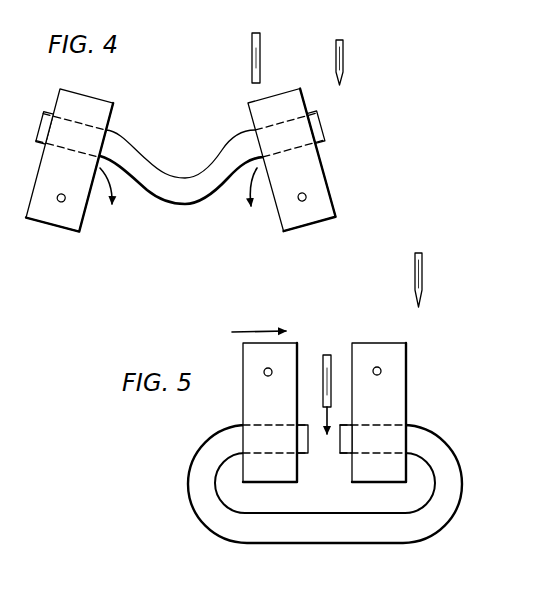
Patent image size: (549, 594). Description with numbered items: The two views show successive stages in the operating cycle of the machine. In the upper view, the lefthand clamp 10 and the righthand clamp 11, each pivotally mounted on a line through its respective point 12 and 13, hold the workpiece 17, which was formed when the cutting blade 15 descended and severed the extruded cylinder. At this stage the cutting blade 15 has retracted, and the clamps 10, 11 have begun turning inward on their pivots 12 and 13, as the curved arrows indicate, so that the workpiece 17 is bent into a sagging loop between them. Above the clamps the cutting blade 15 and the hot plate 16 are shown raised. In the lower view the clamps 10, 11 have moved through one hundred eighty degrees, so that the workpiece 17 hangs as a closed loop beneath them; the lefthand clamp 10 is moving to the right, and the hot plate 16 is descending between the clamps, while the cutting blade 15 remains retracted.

In FIG. 4, the lefthand clamp 10 is at (95, 113).
In FIG. 5, the lefthand clamp 10 is at (255, 407).
In FIG. 4, the righthand clamp 11 is at (262, 113).
In FIG. 5, the righthand clamp 11 is at (390, 407).
In FIG. 4, the pivot 12 is at (57, 203).
In FIG. 4, the pivot 13 is at (295, 198).
In FIG. 4, the cutting blade 15 is at (343, 53).
In FIG. 5, the cutting blade 15 is at (422, 267).
In FIG. 4, the hot plate 16 is at (260, 53).
In FIG. 5, the hot plate 16 is at (330, 362).
In FIG. 4, the workpiece 17 is at (170, 196).
In FIG. 5, the workpiece 17 is at (292, 527).